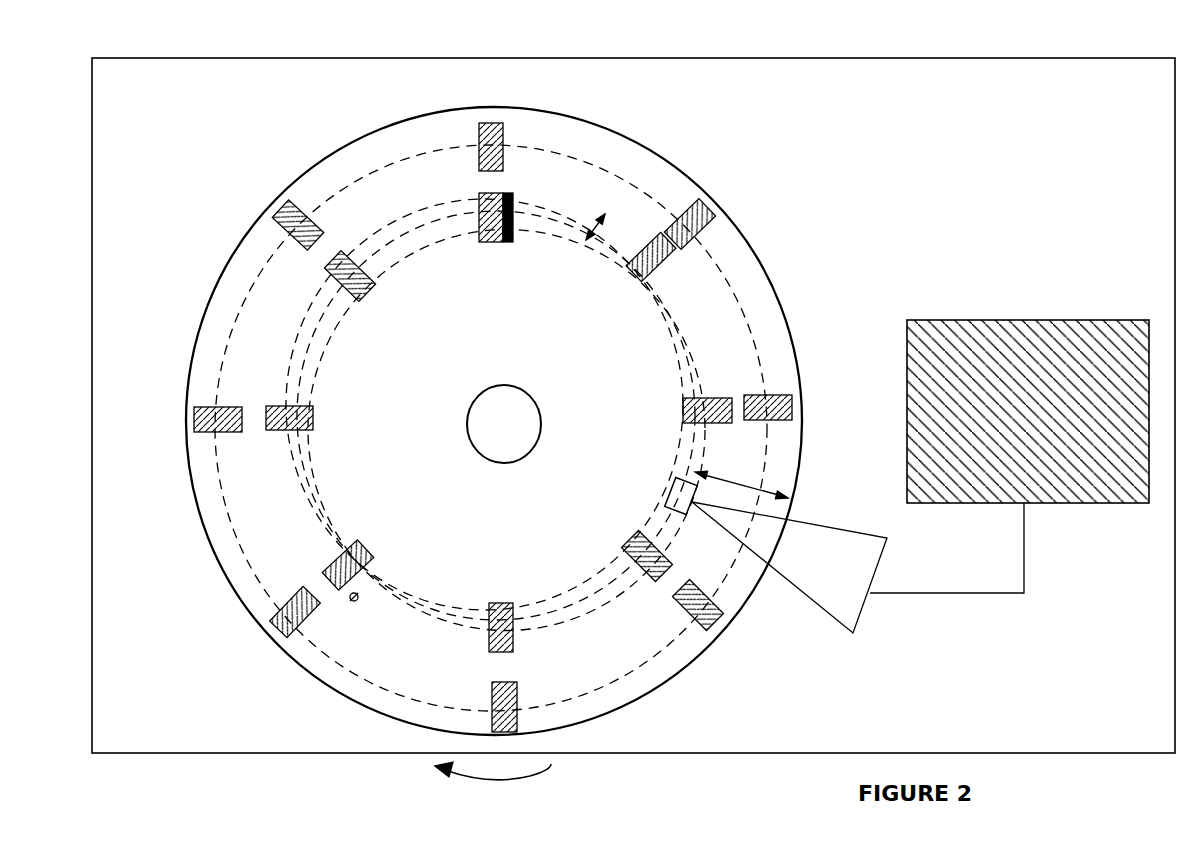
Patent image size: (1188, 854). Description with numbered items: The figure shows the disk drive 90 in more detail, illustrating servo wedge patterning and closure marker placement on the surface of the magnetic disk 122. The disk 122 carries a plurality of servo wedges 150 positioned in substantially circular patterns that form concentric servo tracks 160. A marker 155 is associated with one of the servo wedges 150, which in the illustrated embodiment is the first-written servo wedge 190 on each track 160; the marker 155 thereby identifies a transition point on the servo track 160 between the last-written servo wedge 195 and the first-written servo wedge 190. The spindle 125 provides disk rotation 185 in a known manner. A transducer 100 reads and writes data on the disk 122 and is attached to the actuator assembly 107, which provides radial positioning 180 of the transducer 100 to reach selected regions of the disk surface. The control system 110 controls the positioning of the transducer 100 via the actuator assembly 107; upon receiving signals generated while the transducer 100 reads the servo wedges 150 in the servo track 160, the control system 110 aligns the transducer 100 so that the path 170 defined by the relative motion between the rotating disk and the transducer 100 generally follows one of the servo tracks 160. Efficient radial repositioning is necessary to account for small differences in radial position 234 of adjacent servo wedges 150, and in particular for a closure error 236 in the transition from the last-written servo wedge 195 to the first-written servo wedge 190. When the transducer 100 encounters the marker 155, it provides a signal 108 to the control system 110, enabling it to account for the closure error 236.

The disk drive 90 is at (836, 58).
The transducer 100 is at (664, 500).
The actuator assembly 107 is at (843, 627).
The signal 108 is at (1010, 597).
The control system 110 is at (1027, 320).
The magnetic disk 122 is at (748, 243).
The spindle 125 is at (501, 384).
The servo wedge 150 is at (503, 653).
The marker 155 is at (514, 200).
The servo track 160 is at (754, 332).
The path 170 is at (678, 476).
The radial positioning 180 is at (757, 500).
The disk rotation 185 is at (493, 784).
The first-written servo wedge 190 is at (485, 198).
The last-written servo wedge 195 is at (641, 283).
The difference in radial position 234 is at (358, 606).
The closure error 236 is at (586, 243).